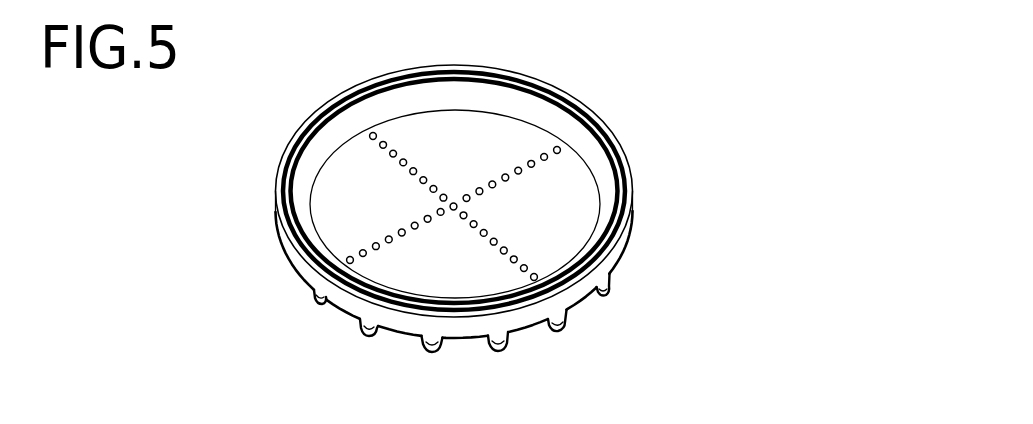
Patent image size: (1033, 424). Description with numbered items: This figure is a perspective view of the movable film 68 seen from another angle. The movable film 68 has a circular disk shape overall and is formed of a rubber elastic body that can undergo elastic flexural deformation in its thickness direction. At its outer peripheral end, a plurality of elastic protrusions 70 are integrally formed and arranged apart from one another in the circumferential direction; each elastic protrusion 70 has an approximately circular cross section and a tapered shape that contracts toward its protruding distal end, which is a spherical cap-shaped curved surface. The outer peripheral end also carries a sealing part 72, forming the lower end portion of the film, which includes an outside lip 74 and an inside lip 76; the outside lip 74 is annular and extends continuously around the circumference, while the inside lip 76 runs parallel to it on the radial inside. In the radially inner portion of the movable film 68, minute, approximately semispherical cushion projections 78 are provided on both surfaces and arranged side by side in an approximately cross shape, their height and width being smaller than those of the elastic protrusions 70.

The movable film 68 is at (629, 95).
The elastic protrusions 70 is at (320, 306).
The sealing part 72 is at (279, 170).
The outside lip 74 is at (320, 117).
The inside lip 76 is at (359, 102).
The cushion projections 78 is at (404, 160).